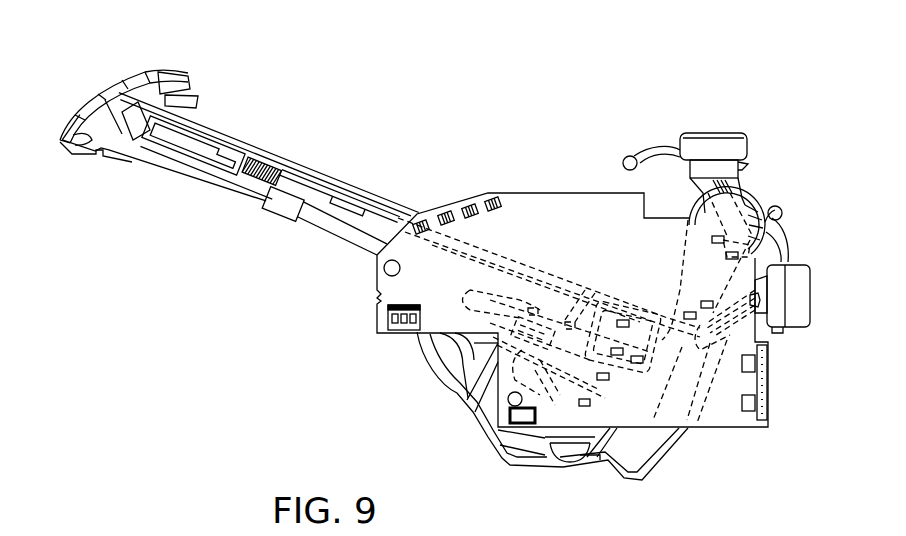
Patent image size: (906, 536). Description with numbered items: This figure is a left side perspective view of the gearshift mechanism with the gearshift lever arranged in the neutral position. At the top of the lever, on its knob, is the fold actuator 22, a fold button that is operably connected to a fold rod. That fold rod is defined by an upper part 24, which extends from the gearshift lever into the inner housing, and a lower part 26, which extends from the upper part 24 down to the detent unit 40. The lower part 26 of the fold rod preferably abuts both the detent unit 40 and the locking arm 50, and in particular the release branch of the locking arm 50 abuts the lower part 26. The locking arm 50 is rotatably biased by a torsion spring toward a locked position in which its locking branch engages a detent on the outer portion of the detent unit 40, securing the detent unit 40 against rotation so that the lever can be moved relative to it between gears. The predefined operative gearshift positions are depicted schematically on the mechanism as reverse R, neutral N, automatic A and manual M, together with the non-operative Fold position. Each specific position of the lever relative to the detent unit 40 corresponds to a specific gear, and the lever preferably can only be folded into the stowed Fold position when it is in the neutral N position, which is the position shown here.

The fold actuator 22 is at (126, 85).
The upper part of the fold rod 24 is at (233, 131).
The lower part of the fold rod 26 is at (323, 192).
The detent unit 40 is at (482, 418).
The locking arm 50 is at (758, 200).
The reverse gearshift position R is at (597, 309).
The neutral gearshift position N is at (597, 350).
The automatic gearshift position A is at (572, 380).
The manual gearshift position M is at (575, 400).
The fold position Fold is at (662, 357).